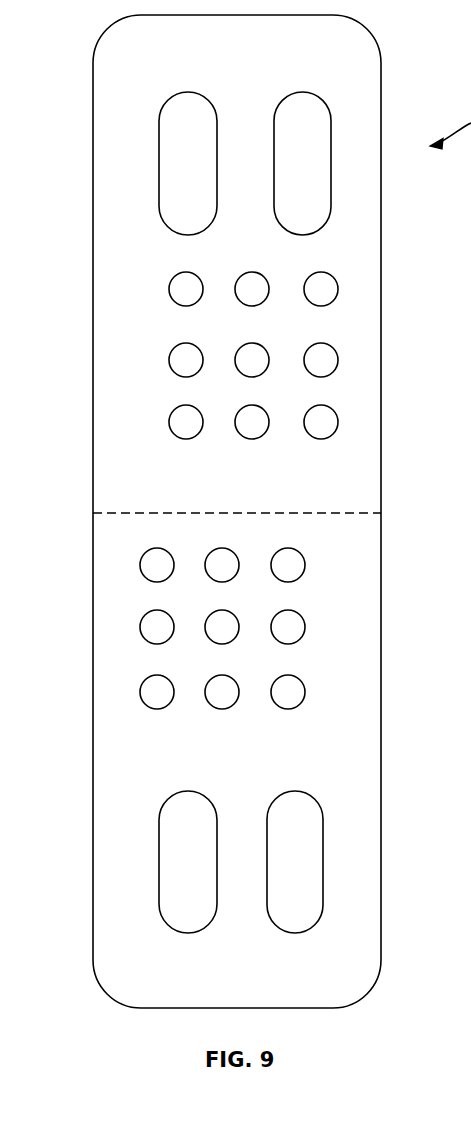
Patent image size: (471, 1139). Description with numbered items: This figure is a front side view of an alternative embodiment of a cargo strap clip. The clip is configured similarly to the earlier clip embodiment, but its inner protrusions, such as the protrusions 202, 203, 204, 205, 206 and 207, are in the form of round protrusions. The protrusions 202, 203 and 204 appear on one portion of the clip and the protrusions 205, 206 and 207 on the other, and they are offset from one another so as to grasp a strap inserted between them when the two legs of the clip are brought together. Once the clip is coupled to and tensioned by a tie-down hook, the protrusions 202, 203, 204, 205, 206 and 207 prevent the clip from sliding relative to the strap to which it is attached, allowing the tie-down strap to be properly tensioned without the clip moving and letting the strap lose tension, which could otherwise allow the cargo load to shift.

The protrusion 202 is at (140, 690).
The protrusion 203 is at (140, 625).
The protrusion 204 is at (140, 562).
The protrusion 205 is at (170, 422).
The protrusion 206 is at (167, 360).
The protrusion 207 is at (170, 287).